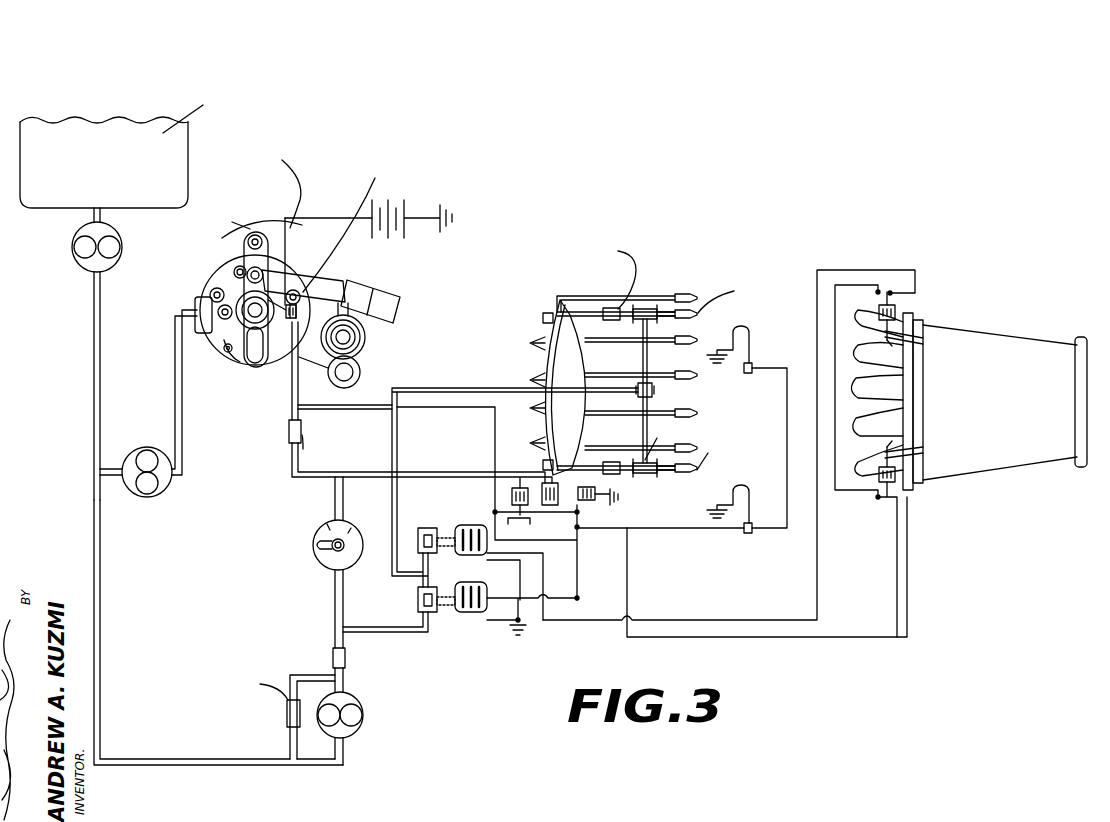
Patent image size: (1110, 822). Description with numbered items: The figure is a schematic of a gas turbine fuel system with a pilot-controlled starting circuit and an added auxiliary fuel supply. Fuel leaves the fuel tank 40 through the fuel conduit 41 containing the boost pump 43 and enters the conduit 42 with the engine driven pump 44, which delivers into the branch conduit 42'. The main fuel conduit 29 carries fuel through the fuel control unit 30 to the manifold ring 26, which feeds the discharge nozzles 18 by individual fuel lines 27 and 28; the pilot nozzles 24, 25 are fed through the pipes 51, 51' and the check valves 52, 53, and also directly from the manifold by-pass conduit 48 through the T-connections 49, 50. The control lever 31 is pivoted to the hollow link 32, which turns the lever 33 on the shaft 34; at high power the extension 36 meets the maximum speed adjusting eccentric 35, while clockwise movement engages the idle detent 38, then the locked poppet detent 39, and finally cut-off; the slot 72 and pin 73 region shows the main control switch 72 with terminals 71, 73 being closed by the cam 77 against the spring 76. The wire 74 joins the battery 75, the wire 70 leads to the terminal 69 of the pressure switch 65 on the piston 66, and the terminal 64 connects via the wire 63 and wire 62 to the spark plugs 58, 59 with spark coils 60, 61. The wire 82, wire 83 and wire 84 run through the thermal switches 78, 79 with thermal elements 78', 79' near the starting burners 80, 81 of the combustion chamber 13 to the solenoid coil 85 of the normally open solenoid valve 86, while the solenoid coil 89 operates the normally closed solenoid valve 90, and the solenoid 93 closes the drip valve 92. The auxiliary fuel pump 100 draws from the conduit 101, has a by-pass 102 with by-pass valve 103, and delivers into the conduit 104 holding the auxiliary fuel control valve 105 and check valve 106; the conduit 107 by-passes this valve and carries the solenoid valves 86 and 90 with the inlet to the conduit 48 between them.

The starting burner combustion chamber 13 is at (1005, 465).
The discharge nozzles 18 is at (680, 378).
The pilot nozzle 24 is at (738, 292).
The pilot nozzle 25 is at (726, 457).
The manifold ring 26 is at (583, 353).
The fuel line 27 is at (567, 297).
The fuel line 28 is at (590, 311).
The main fuel conduit 29 is at (405, 475).
The fuel control unit 30 is at (225, 278).
The control lever 31 is at (227, 232).
The hollow link 32 is at (328, 278).
The lever 33 is at (372, 313).
The shaft 34 is at (352, 338).
The maximum speed adjusting eccentric 35 is at (354, 373).
The extension 36 is at (325, 362).
The idle detent 38 is at (224, 348).
The locked poppet detent 39 is at (230, 356).
The fuel tank 40 is at (182, 141).
The fuel conduit 41 is at (97, 317).
The conduit 42 is at (115, 451).
The branch conduit 42' is at (166, 392).
The boost pump 43 is at (72, 247).
The engine driven pump 44 is at (148, 492).
The manifold by-pass conduit 48 is at (397, 430).
The T-connection 49 is at (648, 356).
The T-connection 50 is at (640, 404).
The pipe 51 is at (683, 286).
The pipe 51' is at (660, 488).
The check valve 52 is at (619, 309).
The check valve 53 is at (617, 462).
The spark plug 58 is at (750, 334).
The spark plug 59 is at (750, 491).
The spark coil 60 is at (747, 374).
The spark coil 61 is at (752, 530).
The wire 62 is at (790, 398).
The wire 63 is at (688, 530).
The terminal 64 is at (575, 512).
The pressure switch 65 is at (538, 559).
The piston 66 is at (514, 488).
The terminal 69 is at (506, 514).
The wire 70 is at (369, 408).
The terminal 71 is at (293, 350).
The main control switch 72 is at (255, 345).
The terminal 73 is at (302, 292).
The wire 74 is at (315, 217).
The battery 75 is at (392, 198).
The spring 76 is at (298, 310).
The cam 77 is at (287, 250).
The thermal switch 78 is at (913, 295).
The thermal element 78' is at (930, 316).
The thermal switch 79 is at (883, 542).
The thermal element 79' is at (930, 455).
The starting burner 80 is at (897, 345).
The starting burner 81 is at (895, 444).
The wire 82 is at (760, 638).
The wire 83 is at (853, 493).
The wire 84 is at (866, 270).
The solenoid coil 85 is at (470, 524).
The solenoid valve 86 is at (417, 532).
The solenoid coil 89 is at (477, 613).
The solenoid valve 90 is at (418, 600).
The drip valve 92 is at (579, 512).
The solenoid 93 is at (603, 489).
The auxiliary fuel pump 100 is at (363, 720).
The conduit 101 is at (100, 665).
The by-pass 102 is at (296, 673).
The by-pass valve 103 is at (287, 715).
The conduit 104 is at (335, 612).
The auxiliary fuel control valve 105 is at (353, 563).
The check valve 106 is at (347, 658).
The conduit 107 is at (425, 633).